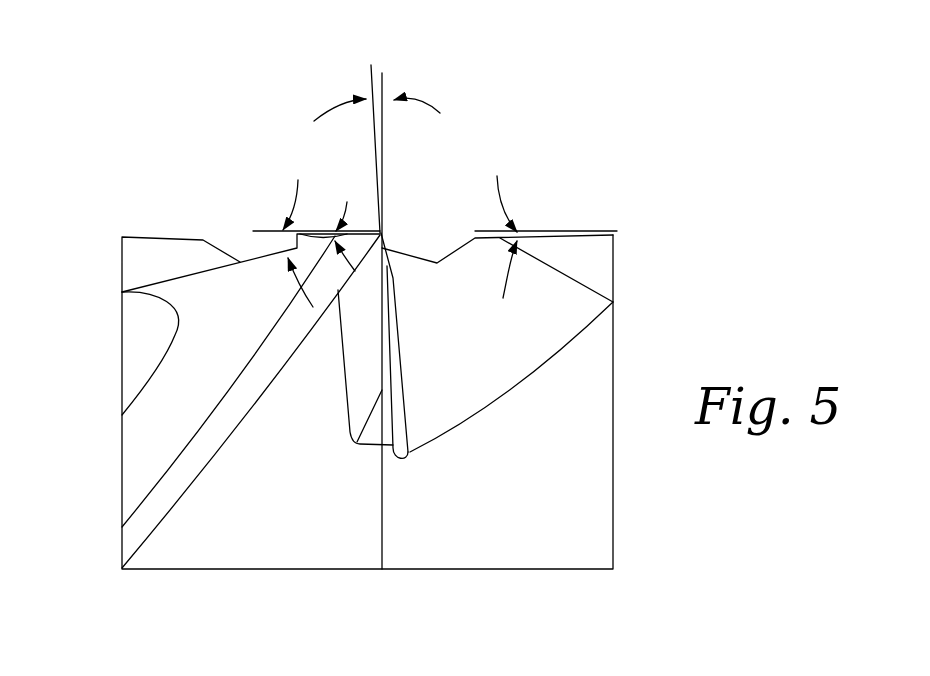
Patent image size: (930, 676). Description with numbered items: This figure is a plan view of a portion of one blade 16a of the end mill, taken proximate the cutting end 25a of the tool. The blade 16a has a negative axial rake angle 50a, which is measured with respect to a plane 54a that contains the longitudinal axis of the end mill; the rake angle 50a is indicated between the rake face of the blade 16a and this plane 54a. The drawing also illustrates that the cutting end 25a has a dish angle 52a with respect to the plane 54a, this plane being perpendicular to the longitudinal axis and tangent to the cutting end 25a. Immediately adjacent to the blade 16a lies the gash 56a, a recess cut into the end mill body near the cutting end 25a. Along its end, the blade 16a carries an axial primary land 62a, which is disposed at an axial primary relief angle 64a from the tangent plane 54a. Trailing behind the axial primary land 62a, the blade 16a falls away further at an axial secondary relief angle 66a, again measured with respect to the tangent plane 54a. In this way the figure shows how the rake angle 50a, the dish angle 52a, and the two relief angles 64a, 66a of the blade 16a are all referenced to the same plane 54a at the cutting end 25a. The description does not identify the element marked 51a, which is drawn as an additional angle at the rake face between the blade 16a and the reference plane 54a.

The blade 16a is at (251, 259).
The cutting end 25a is at (654, 213).
The negative axial rake angle 50a is at (338, 104).
The rake angle 51a is at (384, 140).
The dish angle 52a is at (497, 186).
The plane 54a is at (583, 231).
The gash 56a is at (387, 266).
The axial primary land 62a is at (342, 233).
The axial primary relief angle 64a is at (347, 202).
The axial secondary relief angle 66a is at (296, 184).